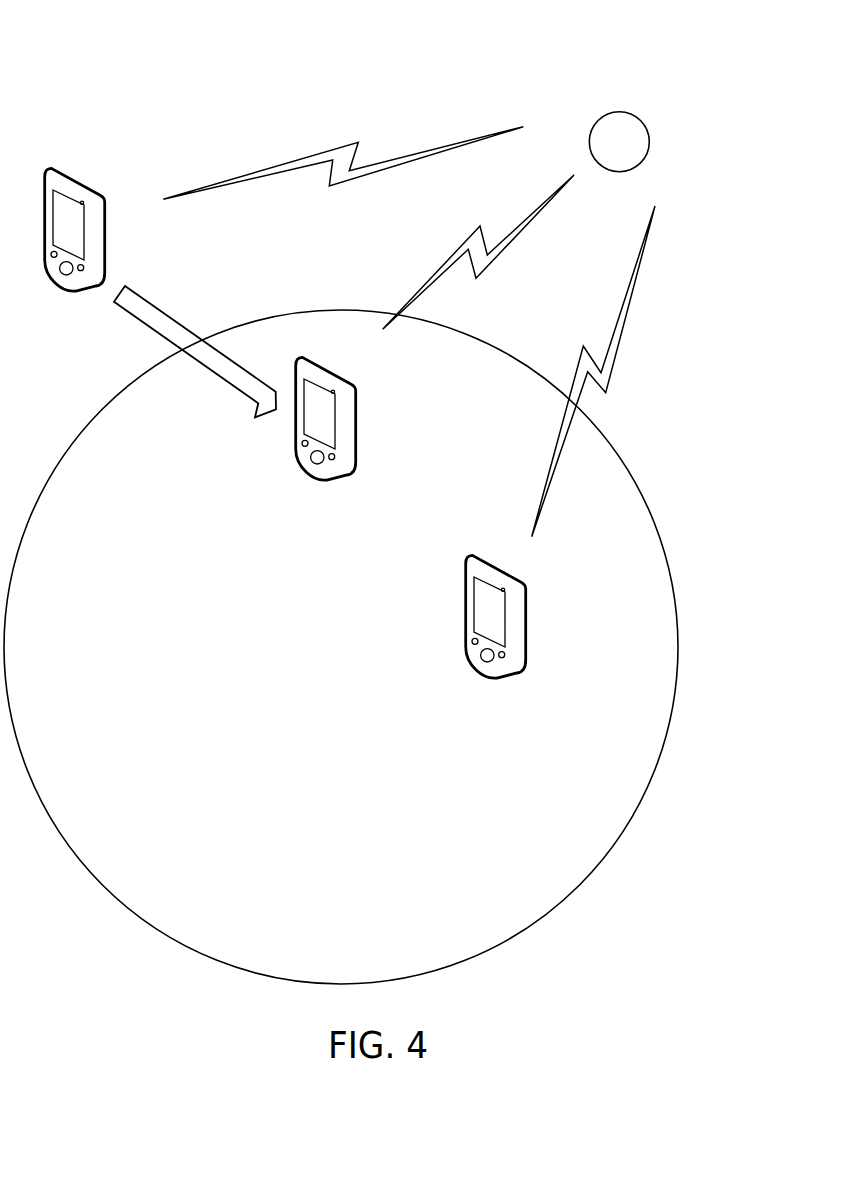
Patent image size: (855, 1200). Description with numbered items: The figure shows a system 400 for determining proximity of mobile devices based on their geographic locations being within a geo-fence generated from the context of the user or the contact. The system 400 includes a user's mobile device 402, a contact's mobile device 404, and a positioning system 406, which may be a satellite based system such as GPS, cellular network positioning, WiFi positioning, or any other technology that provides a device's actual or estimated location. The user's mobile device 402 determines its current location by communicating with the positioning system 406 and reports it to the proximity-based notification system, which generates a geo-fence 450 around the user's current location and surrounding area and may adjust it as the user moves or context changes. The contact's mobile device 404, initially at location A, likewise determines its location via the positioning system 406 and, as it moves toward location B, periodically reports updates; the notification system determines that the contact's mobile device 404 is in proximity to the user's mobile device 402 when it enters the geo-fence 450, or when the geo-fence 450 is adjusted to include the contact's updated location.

The system 400 is at (130, 81).
The user's mobile device 402 is at (527, 584).
The contact's mobile device 404 is at (105, 200).
The positioning system 406 is at (649, 133).
The geo-fence 450 is at (645, 500).